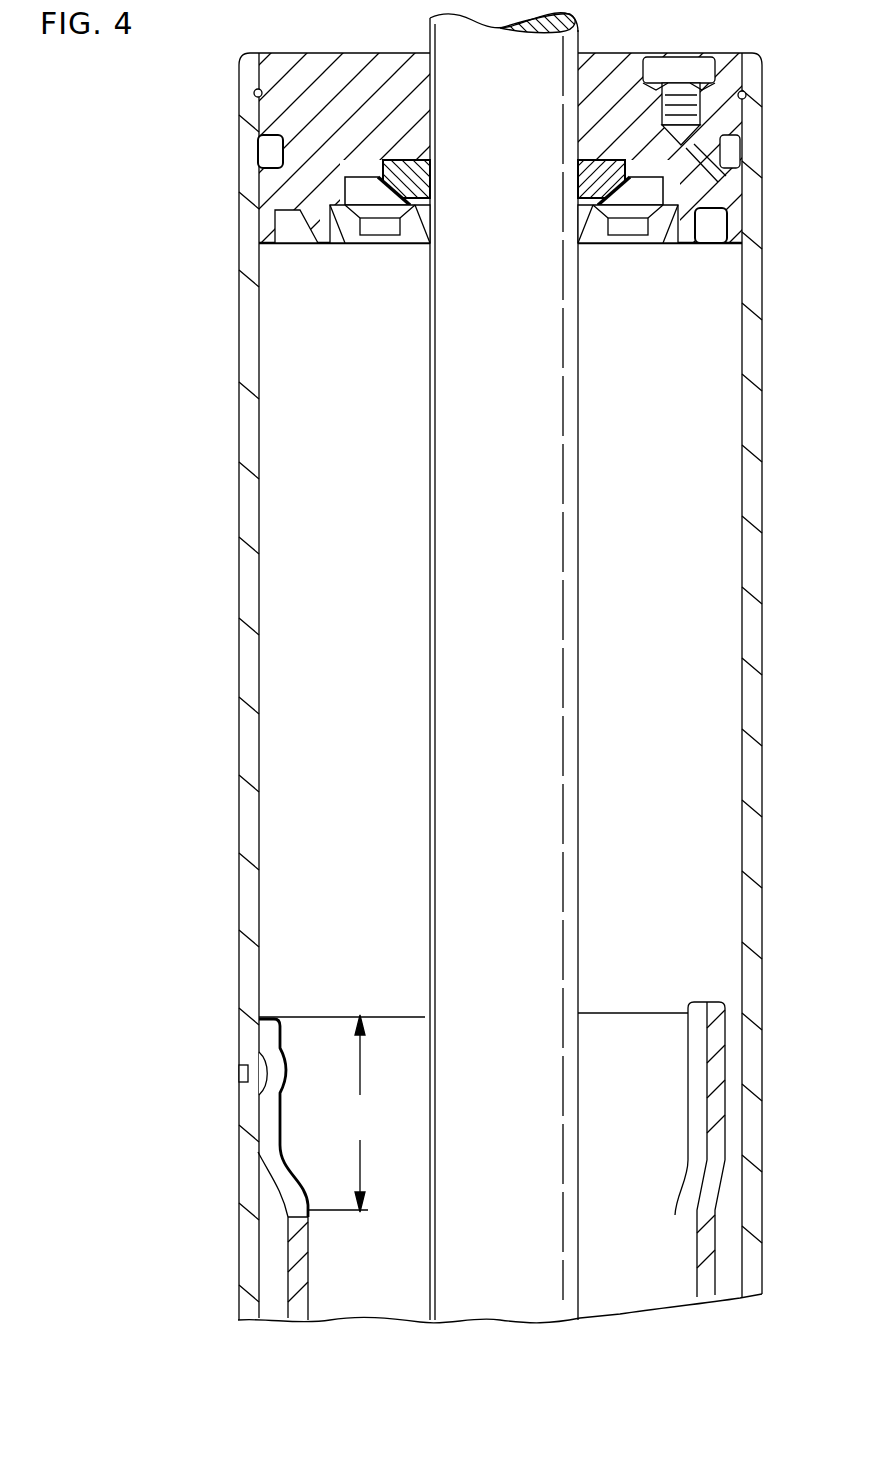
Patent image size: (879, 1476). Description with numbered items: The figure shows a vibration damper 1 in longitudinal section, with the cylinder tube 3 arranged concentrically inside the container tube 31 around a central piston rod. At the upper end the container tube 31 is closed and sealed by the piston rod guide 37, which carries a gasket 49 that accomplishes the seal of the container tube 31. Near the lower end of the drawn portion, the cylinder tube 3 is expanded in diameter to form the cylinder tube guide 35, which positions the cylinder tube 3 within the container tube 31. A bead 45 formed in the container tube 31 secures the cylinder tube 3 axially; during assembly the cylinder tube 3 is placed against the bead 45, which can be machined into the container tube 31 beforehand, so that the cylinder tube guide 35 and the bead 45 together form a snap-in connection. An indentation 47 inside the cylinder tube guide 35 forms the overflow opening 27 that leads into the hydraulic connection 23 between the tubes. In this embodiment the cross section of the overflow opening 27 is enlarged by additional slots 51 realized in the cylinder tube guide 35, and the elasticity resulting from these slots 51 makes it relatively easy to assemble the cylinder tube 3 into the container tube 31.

The vibration damper 1 is at (198, 632).
The cylinder tube 3 is at (300, 1277).
The hydraulic connection 23 is at (727, 1268).
The overflow opening 27 is at (738, 1075).
The container tube 31 is at (239, 410).
The cylinder tube guide 35 is at (345, 1113).
The piston rod guide 37 is at (320, 175).
The beads 45 is at (245, 1073).
The indentation 47 is at (732, 1028).
The gasket 49 is at (270, 150).
The slots 51 is at (285, 1180).